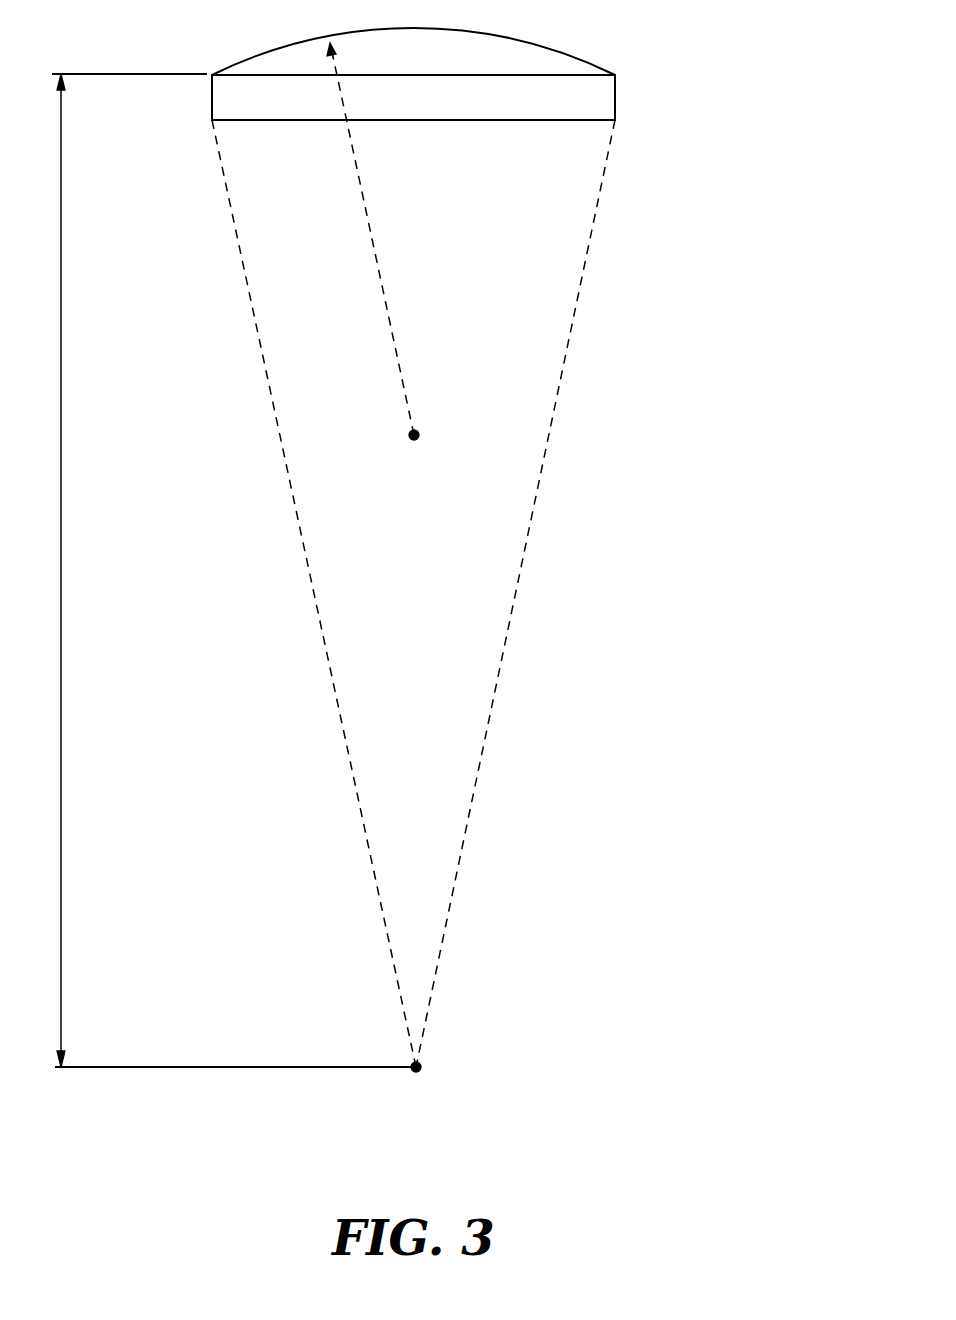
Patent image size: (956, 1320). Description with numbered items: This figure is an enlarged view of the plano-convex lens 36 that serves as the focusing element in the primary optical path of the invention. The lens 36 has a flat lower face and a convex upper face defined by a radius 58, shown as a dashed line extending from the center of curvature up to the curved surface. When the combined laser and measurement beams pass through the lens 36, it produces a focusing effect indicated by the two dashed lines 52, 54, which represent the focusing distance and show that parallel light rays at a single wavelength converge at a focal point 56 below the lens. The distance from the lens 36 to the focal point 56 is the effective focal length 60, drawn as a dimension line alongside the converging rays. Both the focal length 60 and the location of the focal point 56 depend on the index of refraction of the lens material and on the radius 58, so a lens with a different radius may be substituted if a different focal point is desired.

The plano-convex lens 36 is at (547, 53).
The focusing line 52 is at (455, 890).
The focusing line 54 is at (375, 890).
The focal point 56 is at (413, 1075).
The radius 58 is at (375, 240).
The effective focal length 60 is at (61, 710).